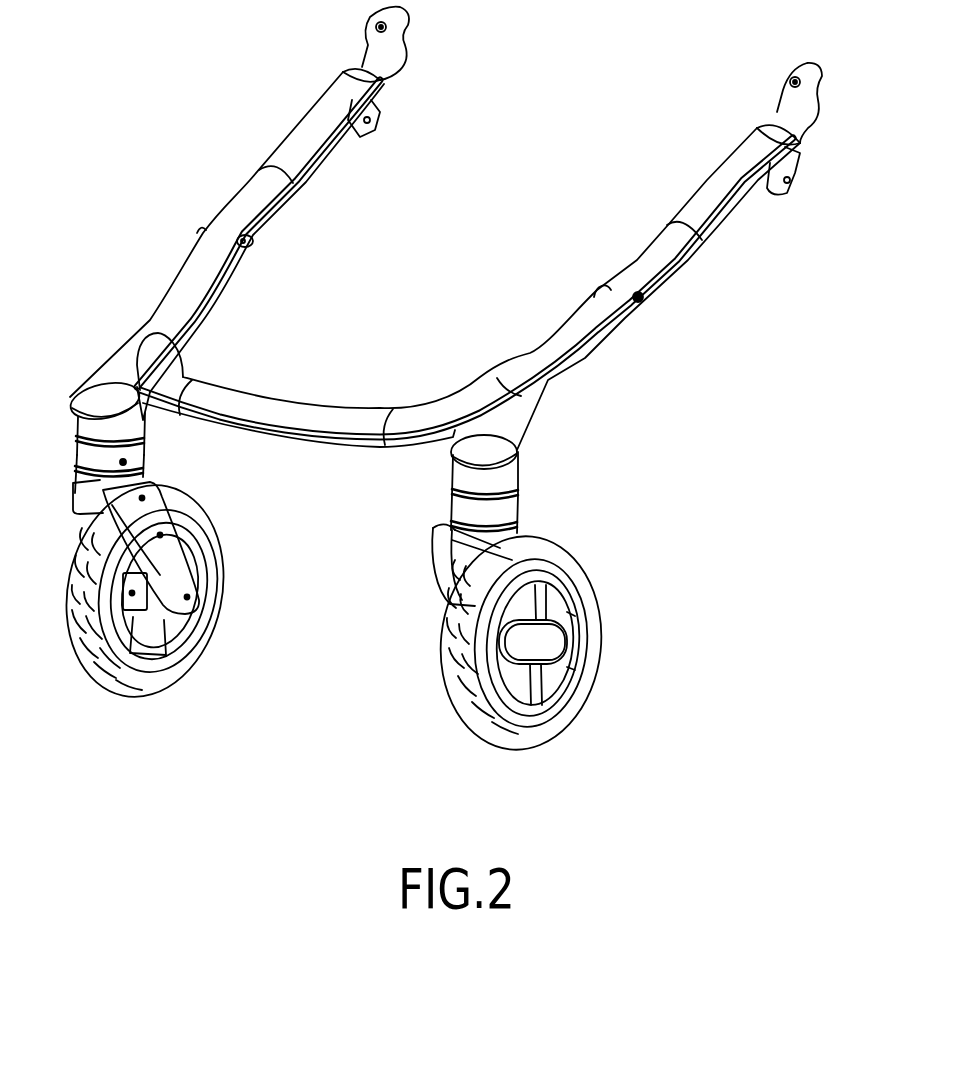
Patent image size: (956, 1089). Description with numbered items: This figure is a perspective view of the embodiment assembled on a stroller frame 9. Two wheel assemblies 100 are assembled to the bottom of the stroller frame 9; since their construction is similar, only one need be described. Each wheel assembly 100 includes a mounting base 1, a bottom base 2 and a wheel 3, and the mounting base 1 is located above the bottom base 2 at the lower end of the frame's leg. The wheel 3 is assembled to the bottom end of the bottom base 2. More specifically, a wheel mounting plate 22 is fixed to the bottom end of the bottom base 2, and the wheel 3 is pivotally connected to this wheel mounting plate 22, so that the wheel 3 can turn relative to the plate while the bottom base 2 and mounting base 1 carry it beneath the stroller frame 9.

The stroller frame 9 is at (198, 273).
The mounting base 1 is at (142, 432).
The bottom base 2 is at (137, 457).
The wheel 3 is at (218, 603).
The wheel mounting plate 22 is at (177, 568).
The wheel assembly 100 is at (398, 567).